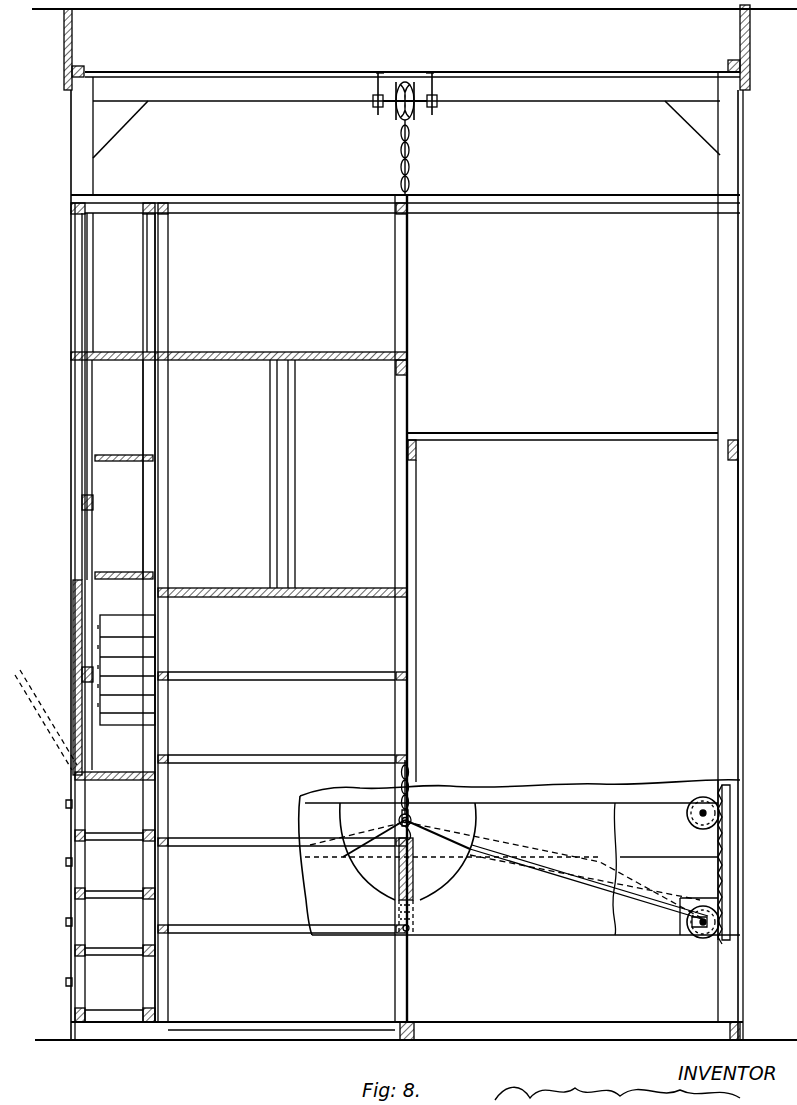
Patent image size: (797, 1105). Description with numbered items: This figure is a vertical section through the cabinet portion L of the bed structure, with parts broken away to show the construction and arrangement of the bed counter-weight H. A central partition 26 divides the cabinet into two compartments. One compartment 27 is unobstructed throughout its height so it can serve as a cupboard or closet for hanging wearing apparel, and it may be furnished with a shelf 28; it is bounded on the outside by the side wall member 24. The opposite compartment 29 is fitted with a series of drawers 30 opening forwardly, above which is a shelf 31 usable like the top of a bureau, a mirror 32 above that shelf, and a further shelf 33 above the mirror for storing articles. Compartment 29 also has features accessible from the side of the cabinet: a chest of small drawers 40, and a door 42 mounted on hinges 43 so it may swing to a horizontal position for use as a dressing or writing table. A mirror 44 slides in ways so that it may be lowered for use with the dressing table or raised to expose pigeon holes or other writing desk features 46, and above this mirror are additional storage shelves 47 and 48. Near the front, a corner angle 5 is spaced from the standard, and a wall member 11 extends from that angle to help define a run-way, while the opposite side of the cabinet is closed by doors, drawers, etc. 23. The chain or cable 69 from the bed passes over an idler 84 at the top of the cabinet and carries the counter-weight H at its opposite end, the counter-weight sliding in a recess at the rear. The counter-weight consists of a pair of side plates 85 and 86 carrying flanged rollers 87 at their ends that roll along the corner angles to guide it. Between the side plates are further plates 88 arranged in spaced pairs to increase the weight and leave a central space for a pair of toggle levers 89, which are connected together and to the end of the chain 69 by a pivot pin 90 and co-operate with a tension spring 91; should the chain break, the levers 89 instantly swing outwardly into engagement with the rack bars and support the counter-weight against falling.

The idler 84 is at (416, 122).
The chain or cable 69 is at (410, 150).
The central partition 26 is at (409, 409).
The shelf 33 is at (325, 358).
The compartment 29 is at (281, 282).
The shelf 28 is at (628, 437).
The compartment 27 is at (630, 555).
The side wall member 24 is at (752, 587).
The cabinet portion L is at (647, 670).
The corner angle 5 is at (88, 481).
The wall member 11 is at (148, 540).
The mirror 44 is at (83, 538).
The storage shelf 48 is at (120, 455).
The storage shelf 47 is at (118, 572).
The mirror 32 is at (307, 474).
The shelf 31 is at (355, 590).
The door 42 is at (78, 628).
The pigeon holes or writing desk features 46 is at (143, 648).
The drawers 30 is at (282, 802).
The hinges 43 is at (72, 773).
The small drawers 40 is at (97, 918).
The doors, drawers, etc. 23 is at (62, 826).
The bed counter-weight H is at (560, 925).
The side plate 85 is at (455, 925).
The flanged rollers 87 is at (703, 797).
The pivot pin 90 is at (412, 818).
The toggle levers 89 is at (465, 840).
The plates 88 is at (375, 878).
The tension spring 91 is at (403, 893).
The side plate 86 is at (463, 812).